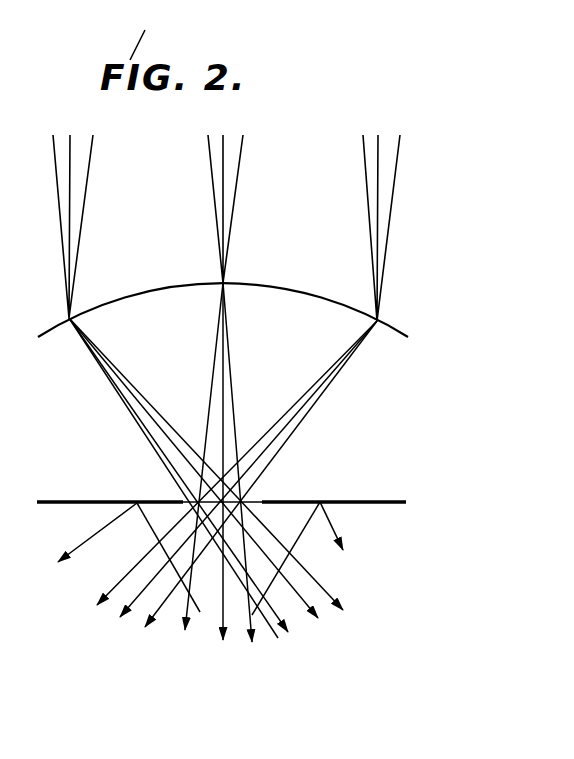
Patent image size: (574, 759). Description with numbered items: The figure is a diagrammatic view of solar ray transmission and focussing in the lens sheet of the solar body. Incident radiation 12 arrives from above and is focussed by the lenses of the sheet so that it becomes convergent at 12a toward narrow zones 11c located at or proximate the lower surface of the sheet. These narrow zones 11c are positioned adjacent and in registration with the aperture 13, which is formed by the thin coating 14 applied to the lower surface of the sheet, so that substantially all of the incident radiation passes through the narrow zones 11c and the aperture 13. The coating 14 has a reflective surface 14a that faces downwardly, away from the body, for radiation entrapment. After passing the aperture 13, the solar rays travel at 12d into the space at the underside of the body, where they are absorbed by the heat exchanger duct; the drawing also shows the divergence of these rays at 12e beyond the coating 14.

The incident radiation 12 is at (395, 228).
The convergent radiation 12a is at (327, 390).
The passing solar rays 12d is at (145, 593).
The divergence angle of rays 12e is at (158, 518).
The narrow zones 11c is at (320, 502).
The aperture 13 is at (217, 503).
The coating 14 is at (397, 506).
The reflective surface 14a is at (320, 502).